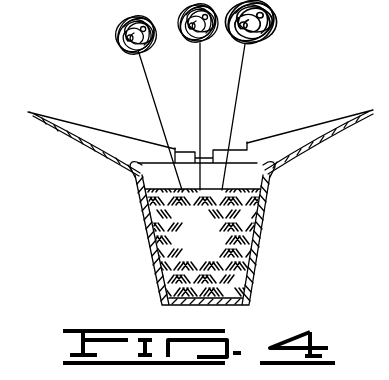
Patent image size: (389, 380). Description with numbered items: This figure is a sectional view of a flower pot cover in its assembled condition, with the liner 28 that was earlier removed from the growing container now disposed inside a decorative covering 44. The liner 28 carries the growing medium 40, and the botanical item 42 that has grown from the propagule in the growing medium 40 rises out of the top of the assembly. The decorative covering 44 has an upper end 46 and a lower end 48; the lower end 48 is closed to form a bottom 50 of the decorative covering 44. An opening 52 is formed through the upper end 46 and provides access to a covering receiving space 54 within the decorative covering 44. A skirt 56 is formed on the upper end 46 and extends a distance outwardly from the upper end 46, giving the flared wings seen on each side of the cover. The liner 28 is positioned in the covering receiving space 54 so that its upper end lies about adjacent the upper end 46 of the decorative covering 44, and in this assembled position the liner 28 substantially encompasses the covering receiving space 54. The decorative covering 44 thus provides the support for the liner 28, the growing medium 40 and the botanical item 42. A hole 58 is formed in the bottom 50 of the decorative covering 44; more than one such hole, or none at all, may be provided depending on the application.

The liner 28 is at (247, 143).
The growing medium 40 is at (234, 246).
The botanical item 42 is at (282, 23).
The decorative covering 44 is at (331, 147).
The upper end 46 is at (270, 170).
The lower end 48 is at (250, 305).
The bottom 50 is at (167, 313).
The opening 52 is at (141, 178).
The covering receiving space 54 is at (152, 188).
The skirt 56 is at (100, 153).
The hole 58 is at (210, 308).